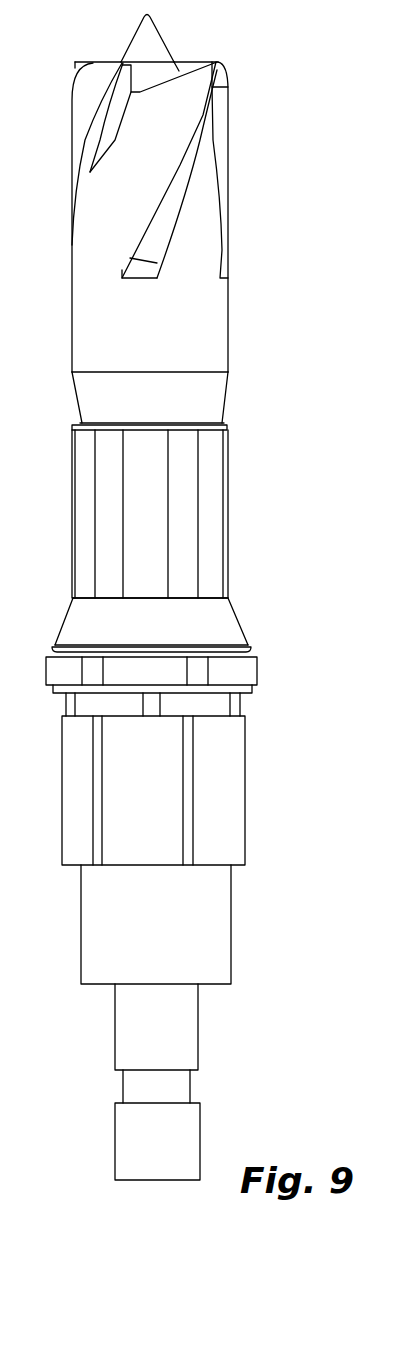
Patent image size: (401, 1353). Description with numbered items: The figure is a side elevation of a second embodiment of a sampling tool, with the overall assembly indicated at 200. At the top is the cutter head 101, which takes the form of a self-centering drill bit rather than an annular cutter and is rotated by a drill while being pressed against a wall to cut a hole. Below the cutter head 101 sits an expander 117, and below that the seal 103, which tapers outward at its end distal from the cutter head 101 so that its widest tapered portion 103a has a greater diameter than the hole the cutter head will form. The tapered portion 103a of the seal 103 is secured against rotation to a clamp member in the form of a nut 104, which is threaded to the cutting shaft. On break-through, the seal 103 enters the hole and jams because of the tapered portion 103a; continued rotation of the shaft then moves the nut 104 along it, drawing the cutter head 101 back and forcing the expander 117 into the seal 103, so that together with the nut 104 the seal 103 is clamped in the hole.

The cutter head 101 is at (228, 147).
The expander 117 is at (226, 390).
The tool holder assembly 200 is at (245, 488).
The seal 103 is at (229, 546).
The tapered portion 103a is at (236, 618).
The nut 104 is at (258, 669).